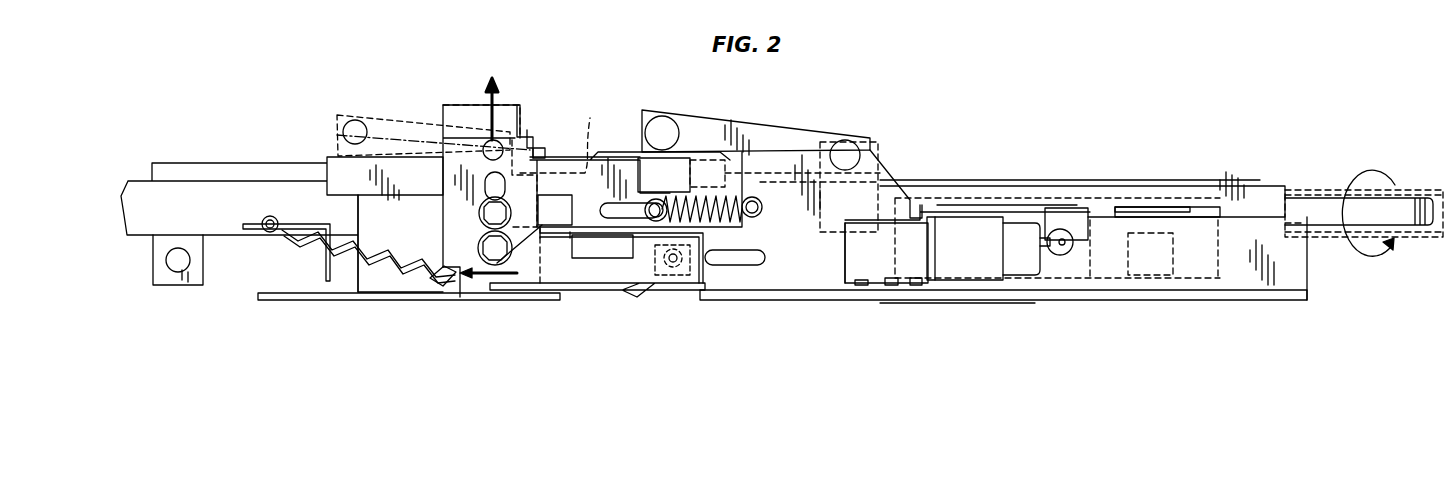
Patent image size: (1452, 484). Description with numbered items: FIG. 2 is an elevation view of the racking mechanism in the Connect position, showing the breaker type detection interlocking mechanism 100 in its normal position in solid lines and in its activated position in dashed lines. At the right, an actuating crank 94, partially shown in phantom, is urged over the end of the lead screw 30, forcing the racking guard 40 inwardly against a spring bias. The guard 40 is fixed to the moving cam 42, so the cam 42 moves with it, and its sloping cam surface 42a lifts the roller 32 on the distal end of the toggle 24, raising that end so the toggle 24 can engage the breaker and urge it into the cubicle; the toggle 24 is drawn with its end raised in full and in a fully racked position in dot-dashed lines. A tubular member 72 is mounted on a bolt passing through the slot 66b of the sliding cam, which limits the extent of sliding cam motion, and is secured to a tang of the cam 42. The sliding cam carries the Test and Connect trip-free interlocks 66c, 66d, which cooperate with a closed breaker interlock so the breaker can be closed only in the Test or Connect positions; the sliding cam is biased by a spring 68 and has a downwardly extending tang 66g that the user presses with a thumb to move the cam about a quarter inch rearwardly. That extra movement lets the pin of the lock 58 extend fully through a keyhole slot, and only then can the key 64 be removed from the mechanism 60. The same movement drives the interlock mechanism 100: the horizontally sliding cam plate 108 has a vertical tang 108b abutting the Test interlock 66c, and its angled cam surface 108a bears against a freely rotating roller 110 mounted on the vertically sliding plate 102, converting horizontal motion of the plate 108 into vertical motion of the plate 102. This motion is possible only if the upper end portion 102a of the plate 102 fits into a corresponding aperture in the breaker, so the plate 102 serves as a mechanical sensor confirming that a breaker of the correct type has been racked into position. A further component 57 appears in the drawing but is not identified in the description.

The breaker type detection interlocking mechanism 100 is at (446, 90).
The upper end portion 102a is at (525, 105).
The vertically sliding plate 102 is at (536, 146).
The roller 32 is at (662, 115).
The sloping cam surface 42a is at (700, 158).
The toggle 24 is at (765, 125).
The moving cam 42 is at (1076, 212).
The tang 66g is at (1088, 218).
The racking guard 40 is at (1277, 187).
The actuating crank 94 is at (1320, 188).
The lead screw 30 is at (1398, 205).
The spring 68 is at (378, 240).
The roller 110 is at (478, 215).
The second trip-free interlock 66d is at (327, 272).
The first trip-free interlock 66c is at (703, 236).
The motor mount 57 is at (845, 257).
The lock 58 is at (963, 285).
The mechanism 60 is at (1020, 272).
The key 64 is at (1062, 256).
The angled cam surface 108a is at (527, 283).
The horizontally sliding cam plate 108 is at (597, 290).
The tubular member 72 is at (672, 272).
The vertical tang 108b is at (694, 266).
The slot 66b is at (730, 266).